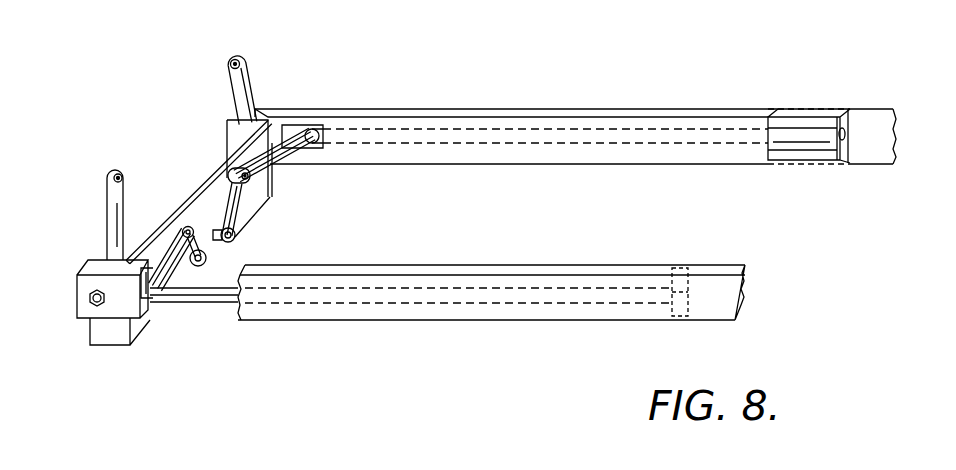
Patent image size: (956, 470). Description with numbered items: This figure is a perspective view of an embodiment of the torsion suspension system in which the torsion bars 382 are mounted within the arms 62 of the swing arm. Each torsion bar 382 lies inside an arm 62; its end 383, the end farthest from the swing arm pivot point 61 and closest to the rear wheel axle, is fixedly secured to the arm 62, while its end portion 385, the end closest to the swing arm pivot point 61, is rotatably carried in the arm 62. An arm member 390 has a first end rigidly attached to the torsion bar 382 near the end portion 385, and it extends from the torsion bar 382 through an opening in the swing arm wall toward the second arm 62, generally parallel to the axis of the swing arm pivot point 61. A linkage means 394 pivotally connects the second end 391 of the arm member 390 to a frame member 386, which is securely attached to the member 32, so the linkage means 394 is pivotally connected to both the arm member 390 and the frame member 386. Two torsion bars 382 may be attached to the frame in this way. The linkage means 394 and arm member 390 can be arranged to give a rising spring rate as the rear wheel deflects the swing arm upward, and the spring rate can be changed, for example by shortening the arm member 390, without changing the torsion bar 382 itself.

The member 32 is at (242, 58).
The swing arm pivot point 61 is at (88, 306).
The arm 62 is at (597, 108).
The torsion bar 382 is at (400, 128).
The end 383 is at (798, 130).
The end portion 385 is at (318, 132).
The frame member 386 is at (208, 172).
The arm member 390 is at (293, 148).
The second end 391 is at (247, 178).
The linkage means 394 is at (200, 250).